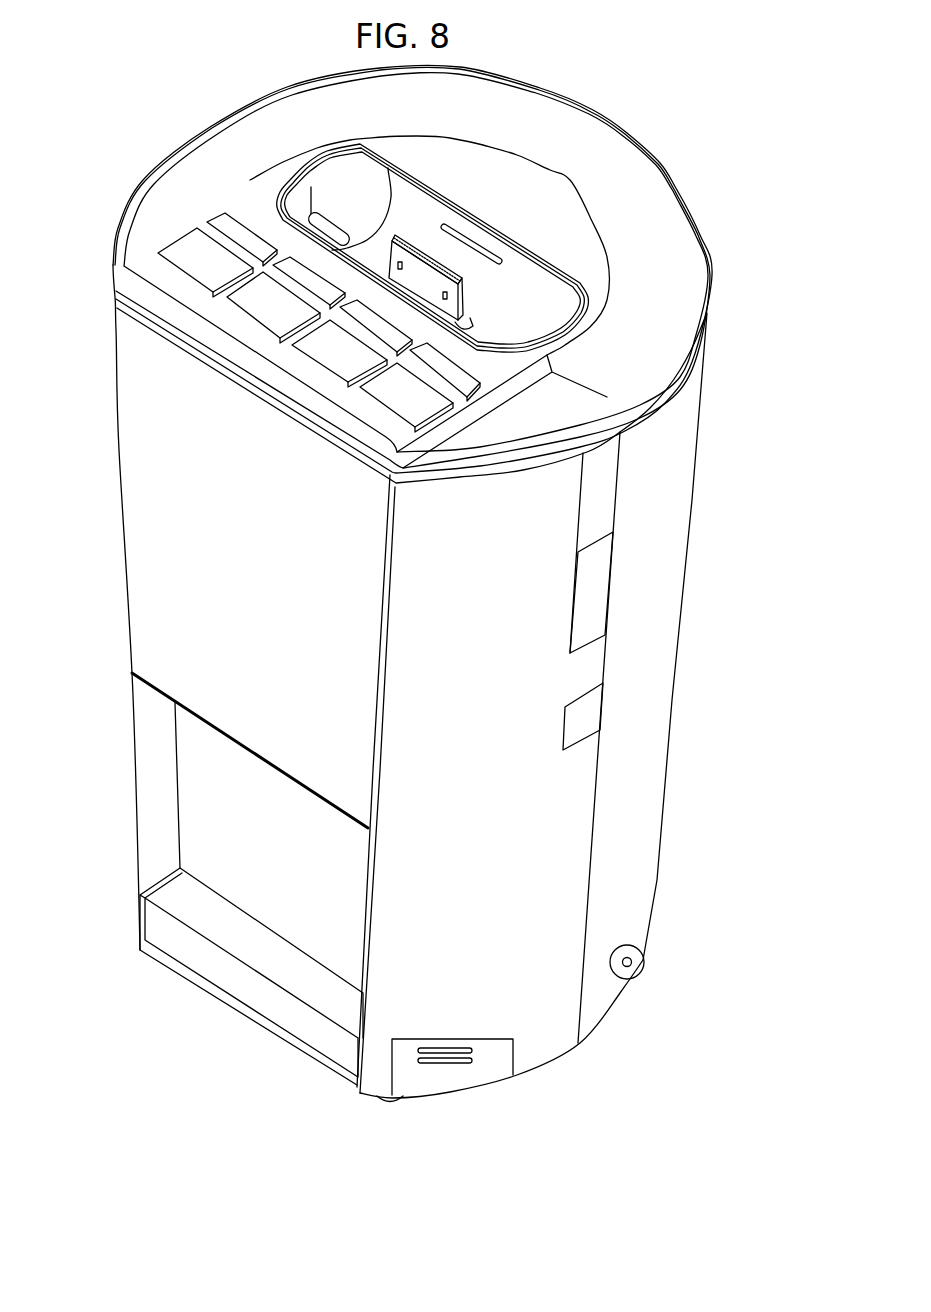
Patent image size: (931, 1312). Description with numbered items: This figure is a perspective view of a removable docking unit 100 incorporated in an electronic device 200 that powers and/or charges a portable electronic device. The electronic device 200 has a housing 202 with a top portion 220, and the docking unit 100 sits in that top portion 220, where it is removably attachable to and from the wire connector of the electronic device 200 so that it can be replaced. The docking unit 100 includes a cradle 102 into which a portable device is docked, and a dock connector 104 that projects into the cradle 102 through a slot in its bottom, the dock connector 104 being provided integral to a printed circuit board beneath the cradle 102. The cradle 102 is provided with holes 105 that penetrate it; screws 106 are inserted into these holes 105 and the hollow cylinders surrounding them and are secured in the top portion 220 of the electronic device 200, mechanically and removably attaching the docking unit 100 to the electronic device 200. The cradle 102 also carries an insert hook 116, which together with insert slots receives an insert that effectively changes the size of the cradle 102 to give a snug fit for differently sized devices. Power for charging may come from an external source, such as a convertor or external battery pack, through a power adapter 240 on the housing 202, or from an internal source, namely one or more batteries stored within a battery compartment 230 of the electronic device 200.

The removable docking unit 100 is at (407, 211).
The cradle 102 is at (404, 208).
The dock connector 104 is at (427, 283).
The holes 105 is at (346, 198).
The screws 106 is at (346, 198).
The insert hook 116 is at (490, 250).
The electronic device 200 is at (702, 612).
The housing 202 is at (667, 803).
The top portion 220 is at (710, 290).
The battery compartment 230 is at (498, 1067).
The power adapter 240 is at (644, 961).